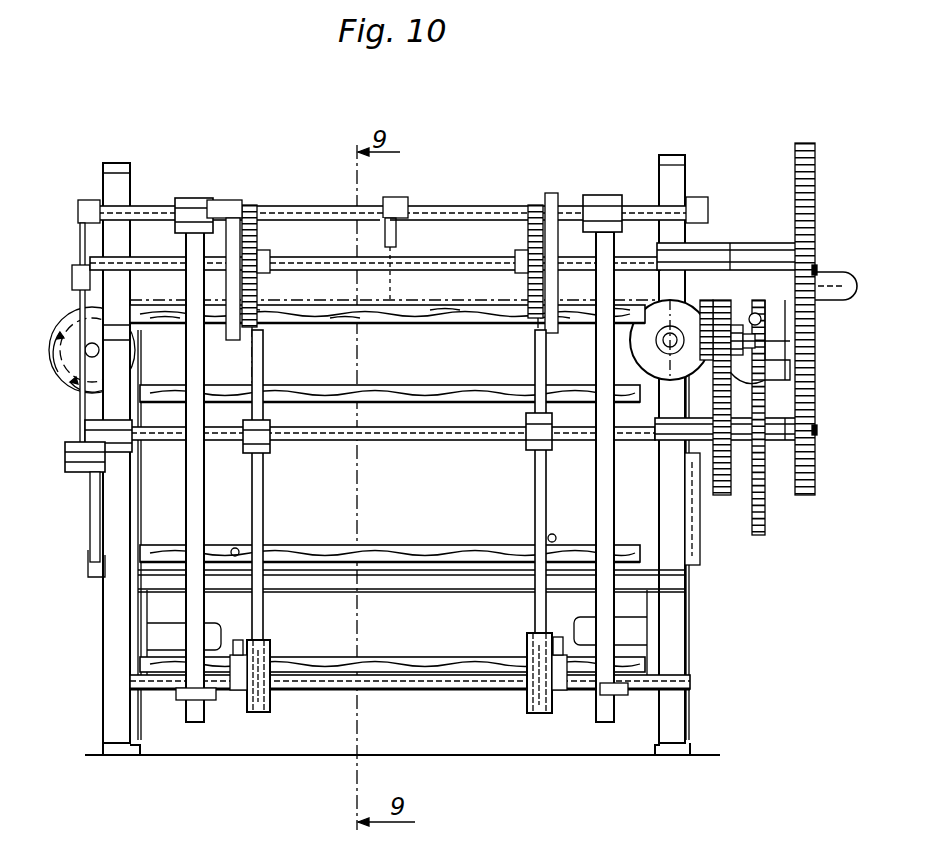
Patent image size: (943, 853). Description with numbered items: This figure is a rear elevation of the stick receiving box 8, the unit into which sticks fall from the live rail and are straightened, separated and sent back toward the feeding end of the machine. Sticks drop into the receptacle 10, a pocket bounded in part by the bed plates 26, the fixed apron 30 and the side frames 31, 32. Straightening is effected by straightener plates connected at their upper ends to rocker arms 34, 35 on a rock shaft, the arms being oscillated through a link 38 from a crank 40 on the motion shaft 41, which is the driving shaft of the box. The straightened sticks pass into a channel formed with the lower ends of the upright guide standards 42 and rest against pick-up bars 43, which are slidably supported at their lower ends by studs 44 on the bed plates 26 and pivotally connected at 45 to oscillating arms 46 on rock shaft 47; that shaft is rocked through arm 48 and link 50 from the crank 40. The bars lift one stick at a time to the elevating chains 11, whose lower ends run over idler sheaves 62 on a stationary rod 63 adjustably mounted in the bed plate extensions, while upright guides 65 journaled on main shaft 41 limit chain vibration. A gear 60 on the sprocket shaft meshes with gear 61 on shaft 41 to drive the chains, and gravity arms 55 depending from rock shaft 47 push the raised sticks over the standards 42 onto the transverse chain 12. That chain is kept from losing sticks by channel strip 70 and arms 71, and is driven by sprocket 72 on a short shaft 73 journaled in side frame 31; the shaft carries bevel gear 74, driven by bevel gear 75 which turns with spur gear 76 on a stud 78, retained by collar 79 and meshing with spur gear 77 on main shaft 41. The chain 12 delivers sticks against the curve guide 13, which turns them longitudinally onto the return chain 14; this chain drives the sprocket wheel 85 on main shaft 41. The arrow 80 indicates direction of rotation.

The stick receiving box 8 is at (412, 609).
The receptacle 10 is at (412, 529).
The elevating chains 11 is at (254, 364).
The transverse chain 12 is at (440, 298).
The curve guide 13 is at (838, 273).
The return chain 14 is at (760, 533).
The bed plates 26 is at (397, 640).
The fixed apron 30 is at (413, 535).
The side frame 31 is at (115, 163).
The side frame 32 is at (670, 155).
The rocker arm 34 is at (92, 526).
The rocker arm 35 is at (700, 540).
The link 38 is at (63, 466).
The crank 40 is at (100, 440).
The motion shaft 41 is at (470, 440).
The upright guide standards 42 is at (262, 516).
The pick-up bars 43 is at (187, 498).
The studs 44 is at (177, 693).
The pivotal connection 45 is at (180, 237).
The oscillating arms 46 is at (190, 198).
The rock shaft 47 is at (301, 207).
The arm 48 is at (80, 241).
The link 50 is at (72, 372).
The gravity arms 55 is at (235, 336).
The gear 60 is at (812, 150).
The gear 61 is at (816, 472).
The idler sheaves 62 is at (270, 706).
The stationary rod 63 is at (420, 690).
The upright guides 65 is at (257, 488).
The channel strip 70 is at (392, 302).
The arms 71 is at (213, 230).
The sprocket 72 is at (626, 440).
The short shaft 73 is at (672, 338).
The bevel gear 74 is at (706, 320).
The bevel gear 75 is at (740, 325).
The spur gear 76 is at (762, 320).
The spur gear 77 is at (721, 415).
The stud 78 is at (772, 342).
The collar 79 is at (767, 380).
The direction arrow 80 is at (72, 318).
The sprocket wheel 85 is at (766, 523).